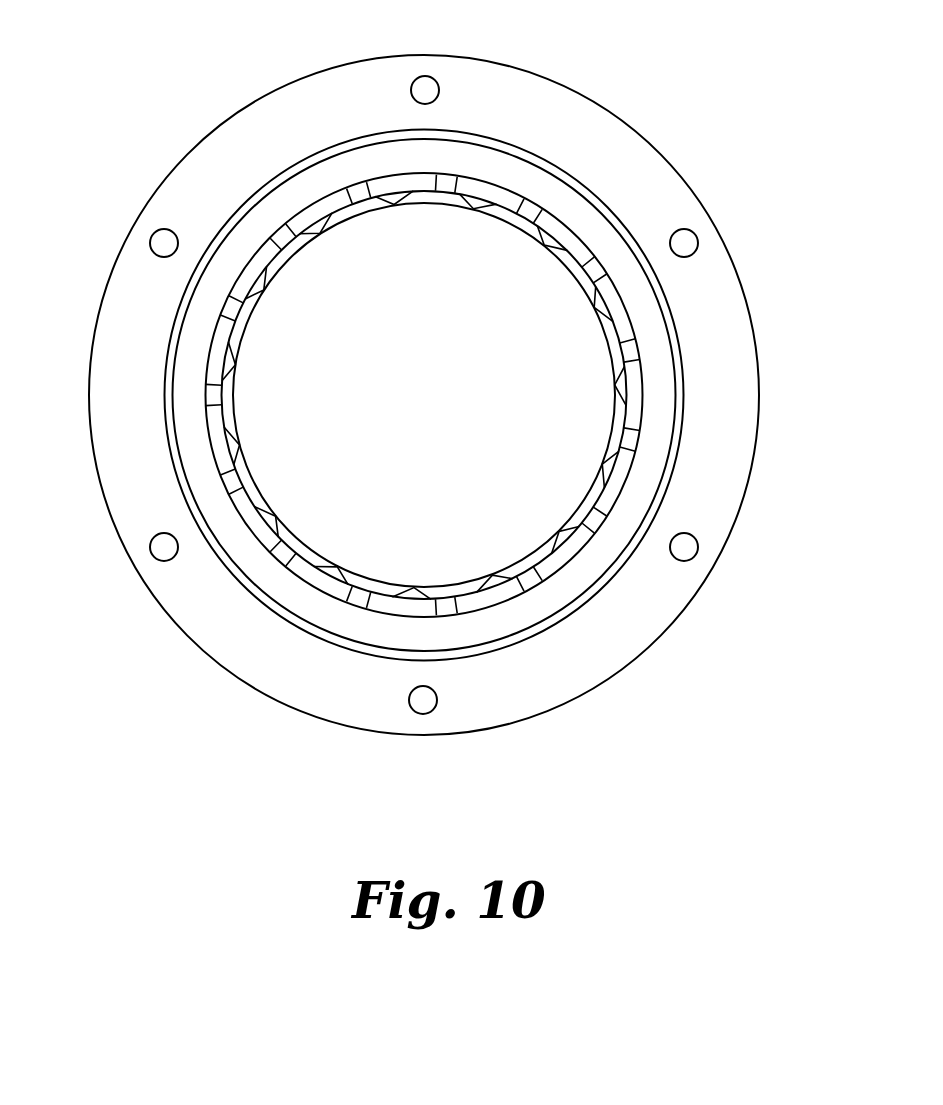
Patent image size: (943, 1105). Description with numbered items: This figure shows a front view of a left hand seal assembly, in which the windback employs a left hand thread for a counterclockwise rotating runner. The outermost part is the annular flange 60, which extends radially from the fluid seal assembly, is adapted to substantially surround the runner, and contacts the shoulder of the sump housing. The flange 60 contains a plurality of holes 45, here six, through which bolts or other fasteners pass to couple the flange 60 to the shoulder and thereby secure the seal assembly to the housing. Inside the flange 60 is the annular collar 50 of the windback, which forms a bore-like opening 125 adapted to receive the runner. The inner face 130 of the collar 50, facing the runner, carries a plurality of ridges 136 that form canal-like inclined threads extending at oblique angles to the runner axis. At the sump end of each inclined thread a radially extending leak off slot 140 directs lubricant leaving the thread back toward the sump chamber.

The holes 45 is at (425, 90).
The flange 60 is at (595, 102).
The annular collar 50 is at (645, 395).
The inner face 130 is at (232, 368).
The ridges 136 is at (227, 412).
The bore-like opening 125 is at (424, 395).
The leak off slot 140 is at (535, 578).